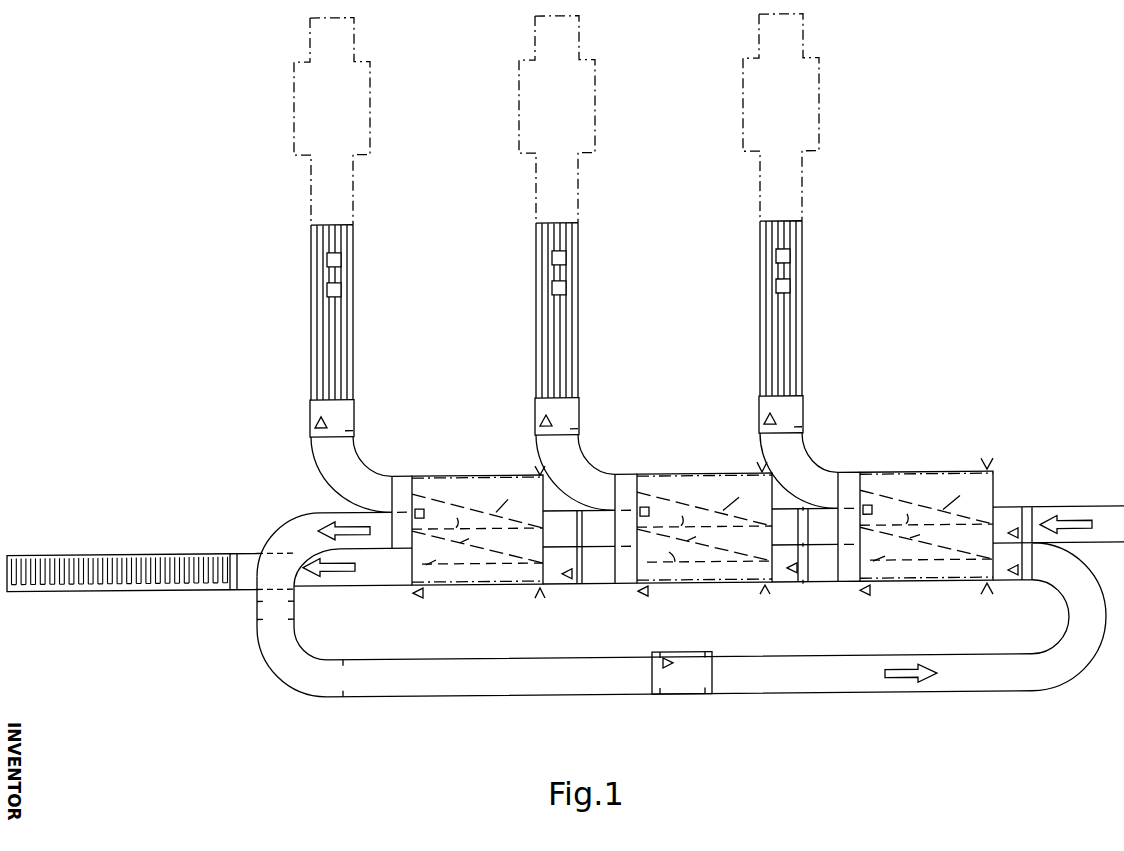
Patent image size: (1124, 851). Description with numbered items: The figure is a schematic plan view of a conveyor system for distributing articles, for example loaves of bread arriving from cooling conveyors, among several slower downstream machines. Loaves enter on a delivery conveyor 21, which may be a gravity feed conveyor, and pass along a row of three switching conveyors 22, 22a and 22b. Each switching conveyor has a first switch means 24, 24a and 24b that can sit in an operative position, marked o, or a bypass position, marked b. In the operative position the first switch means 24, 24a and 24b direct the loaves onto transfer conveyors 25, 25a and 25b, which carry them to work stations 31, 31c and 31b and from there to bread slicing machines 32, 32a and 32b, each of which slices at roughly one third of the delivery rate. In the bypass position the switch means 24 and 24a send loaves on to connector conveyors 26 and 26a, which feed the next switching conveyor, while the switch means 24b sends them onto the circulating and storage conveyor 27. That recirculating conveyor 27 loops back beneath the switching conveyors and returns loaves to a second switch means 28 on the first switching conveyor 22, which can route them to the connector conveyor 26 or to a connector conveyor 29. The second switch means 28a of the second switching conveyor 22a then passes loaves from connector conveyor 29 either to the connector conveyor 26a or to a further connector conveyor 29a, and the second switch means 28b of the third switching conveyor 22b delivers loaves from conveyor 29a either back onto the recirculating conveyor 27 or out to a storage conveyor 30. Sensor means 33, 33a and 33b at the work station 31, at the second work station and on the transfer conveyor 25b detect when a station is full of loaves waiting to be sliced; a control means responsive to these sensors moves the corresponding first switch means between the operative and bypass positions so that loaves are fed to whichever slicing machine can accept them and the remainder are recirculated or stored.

The delivery conveyor 21 is at (1048, 508).
The switching conveyor 22 is at (915, 503).
The switching conveyor 22a is at (693, 502).
The switching conveyor 22b is at (467, 503).
The first switch means 24 is at (926, 500).
The first switch means 24a is at (704, 502).
The first switch means 24b is at (477, 503).
The transfer conveyor 25 is at (807, 453).
The transfer conveyor 25a is at (585, 460).
The transfer conveyor 25b is at (350, 463).
The connector conveyor 26 is at (822, 516).
The connector conveyor 26a is at (593, 524).
The circulating and storage conveyor 27 is at (291, 520).
The second switch means 28 is at (926, 543).
The second switch means 28a is at (704, 544).
The second switch means 28b is at (477, 547).
The connector conveyor 29 is at (821, 578).
The connector conveyor 29a is at (596, 578).
The storage conveyor 30 is at (176, 547).
The work station 31 is at (802, 335).
The work station 31b is at (352, 335).
The tube bundle 31c is at (577, 335).
The bread slicing machine 32 is at (817, 125).
The bread slicing machine 32a is at (594, 127).
The bread slicing machine 32b is at (372, 127).
The sensor means 33 is at (790, 287).
The sensor means 33a is at (566, 287).
The sensor means 33b is at (341, 287).